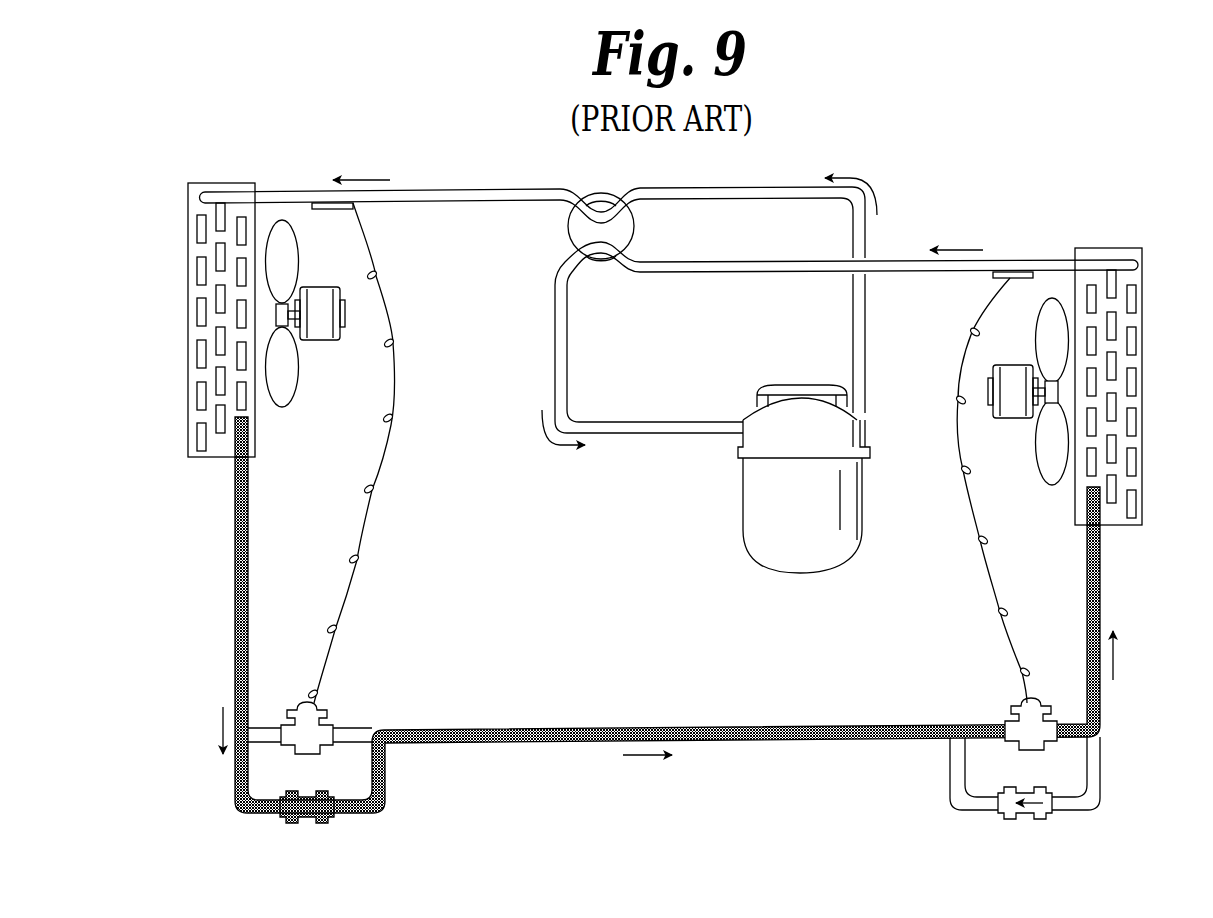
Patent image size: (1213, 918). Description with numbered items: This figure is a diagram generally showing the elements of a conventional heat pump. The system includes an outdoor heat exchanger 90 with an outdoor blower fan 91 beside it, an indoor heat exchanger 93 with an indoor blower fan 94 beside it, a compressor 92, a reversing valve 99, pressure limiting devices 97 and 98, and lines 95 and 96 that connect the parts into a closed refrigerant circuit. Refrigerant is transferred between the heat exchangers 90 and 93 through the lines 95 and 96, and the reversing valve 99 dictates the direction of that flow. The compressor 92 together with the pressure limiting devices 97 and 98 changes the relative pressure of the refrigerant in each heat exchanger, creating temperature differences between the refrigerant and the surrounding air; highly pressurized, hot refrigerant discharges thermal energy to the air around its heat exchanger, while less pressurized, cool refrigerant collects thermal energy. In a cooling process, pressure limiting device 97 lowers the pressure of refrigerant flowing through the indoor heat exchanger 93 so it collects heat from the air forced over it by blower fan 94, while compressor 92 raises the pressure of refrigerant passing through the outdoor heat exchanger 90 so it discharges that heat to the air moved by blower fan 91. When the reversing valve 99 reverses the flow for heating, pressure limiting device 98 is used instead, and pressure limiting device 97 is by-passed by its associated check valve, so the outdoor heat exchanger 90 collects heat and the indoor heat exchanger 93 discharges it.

The outdoor heat exchanger 90 is at (188, 277).
The outdoor blower fan 91 is at (320, 341).
The compressor 92 is at (743, 512).
The indoor heat exchanger 93 is at (1143, 337).
The indoor blower fan 94 is at (1005, 419).
The line 95 is at (420, 204).
The line 96 is at (457, 744).
The pressure limiting device 97 is at (1010, 705).
The pressure limiting device 98 is at (326, 709).
The reversing valve 99 is at (567, 232).